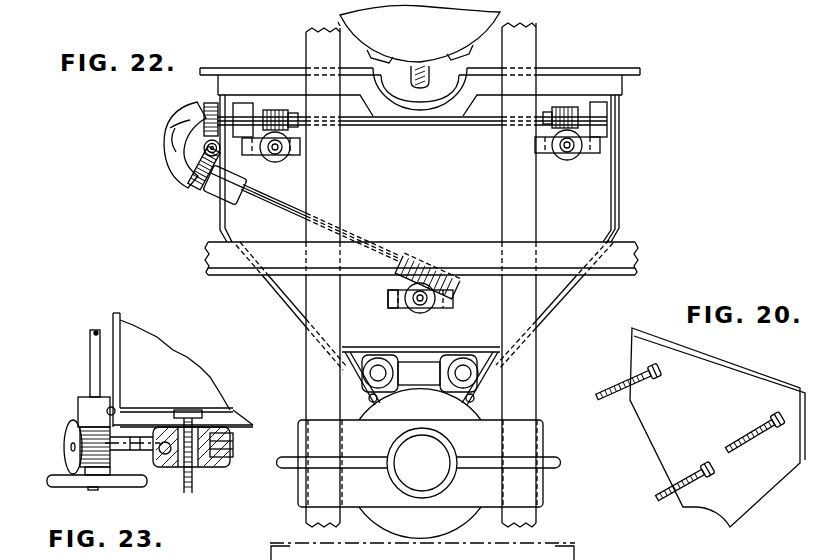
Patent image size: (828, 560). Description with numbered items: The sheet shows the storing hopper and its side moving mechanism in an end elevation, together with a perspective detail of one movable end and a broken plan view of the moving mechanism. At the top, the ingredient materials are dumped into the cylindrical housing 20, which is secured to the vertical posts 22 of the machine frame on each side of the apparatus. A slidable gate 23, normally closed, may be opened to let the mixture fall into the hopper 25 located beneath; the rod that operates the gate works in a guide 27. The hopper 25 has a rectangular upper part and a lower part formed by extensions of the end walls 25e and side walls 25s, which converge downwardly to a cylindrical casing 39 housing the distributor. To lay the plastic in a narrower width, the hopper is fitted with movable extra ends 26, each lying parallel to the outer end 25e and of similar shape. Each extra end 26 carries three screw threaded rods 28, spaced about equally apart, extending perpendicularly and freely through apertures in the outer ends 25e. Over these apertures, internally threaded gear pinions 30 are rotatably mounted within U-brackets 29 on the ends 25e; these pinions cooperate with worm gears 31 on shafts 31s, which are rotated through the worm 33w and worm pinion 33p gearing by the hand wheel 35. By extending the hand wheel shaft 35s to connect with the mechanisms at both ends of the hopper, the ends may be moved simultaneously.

In FIG. 22, the cylindrical housing 20 is at (338, 22).
In FIG. 22, the vertical posts 22 is at (527, 52).
In FIG. 22, the slidable gate 23 is at (430, 48).
In FIG. 22, the hopper 25 is at (432, 192).
In FIG. 22, the end walls 25e is at (613, 216).
In FIG. 23, the end walls 25e is at (127, 423).
In FIG. 22, the side walls 25s is at (284, 304).
In FIG. 22, the extra ends 26 is at (410, 70).
In FIG. 20, the extra ends 26 is at (659, 451).
In FIG. 23, the extra ends 26 is at (186, 410).
In FIG. 22, the guide 27 is at (428, 80).
In FIG. 22, the screw threaded rods 28 is at (283, 160).
In FIG. 20, the screw threaded rods 28 is at (616, 393).
In FIG. 23, the screw threaded rods 28 is at (195, 494).
In FIG. 22, the U-brackets 29 is at (390, 300).
In FIG. 23, the U-brackets 29 is at (215, 459).
In FIG. 22, the gear pinions 30 is at (268, 162).
In FIG. 23, the gear pinions 30 is at (166, 467).
In FIG. 22, the worm gears 31 is at (272, 108).
In FIG. 22, the shafts 31s is at (367, 127).
In FIG. 22, the worm pinion 33p is at (208, 101).
In FIG. 23, the worm pinion 33p is at (76, 441).
In FIG. 22, the worm 33w is at (195, 163).
In FIG. 23, the worm 33w is at (128, 452).
In FIG. 22, the hand wheel 35 is at (165, 147).
In FIG. 23, the hand wheel 35 is at (62, 486).
In FIG. 22, the hand wheel shaft 35s is at (172, 128).
In FIG. 23, the hand wheel shaft 35s is at (90, 358).
In FIG. 22, the cylindrical casing 39 is at (458, 519).